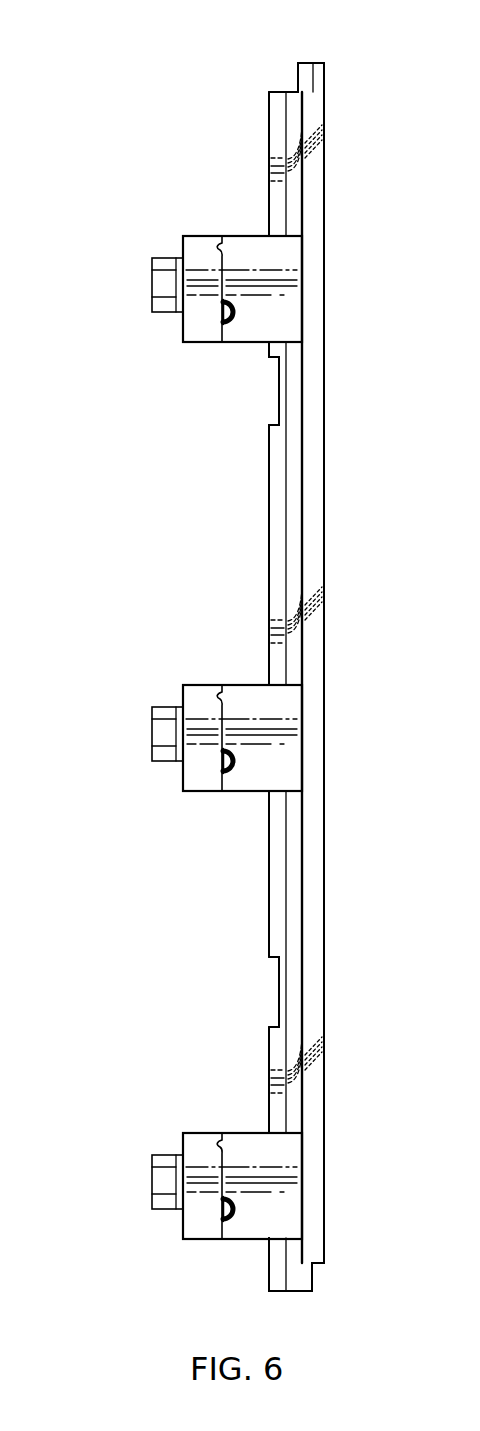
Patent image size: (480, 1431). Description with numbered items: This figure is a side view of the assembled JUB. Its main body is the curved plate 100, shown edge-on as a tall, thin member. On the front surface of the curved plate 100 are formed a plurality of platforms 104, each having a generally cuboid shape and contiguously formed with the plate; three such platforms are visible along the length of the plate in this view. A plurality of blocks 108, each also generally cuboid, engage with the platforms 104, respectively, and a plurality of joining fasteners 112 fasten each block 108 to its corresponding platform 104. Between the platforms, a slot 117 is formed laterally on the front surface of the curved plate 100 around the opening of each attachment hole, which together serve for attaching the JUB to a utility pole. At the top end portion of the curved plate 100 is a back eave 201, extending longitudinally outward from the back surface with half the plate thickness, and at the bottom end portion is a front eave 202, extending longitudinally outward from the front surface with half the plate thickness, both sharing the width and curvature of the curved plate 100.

The curved plate 100 is at (302, 408).
The back eave 201 is at (320, 80).
The front eave 202 is at (277, 1262).
The block 108 is at (180, 274).
The platform 104 is at (252, 322).
The joining fastener 112 is at (166, 712).
The slot 117 is at (280, 993).